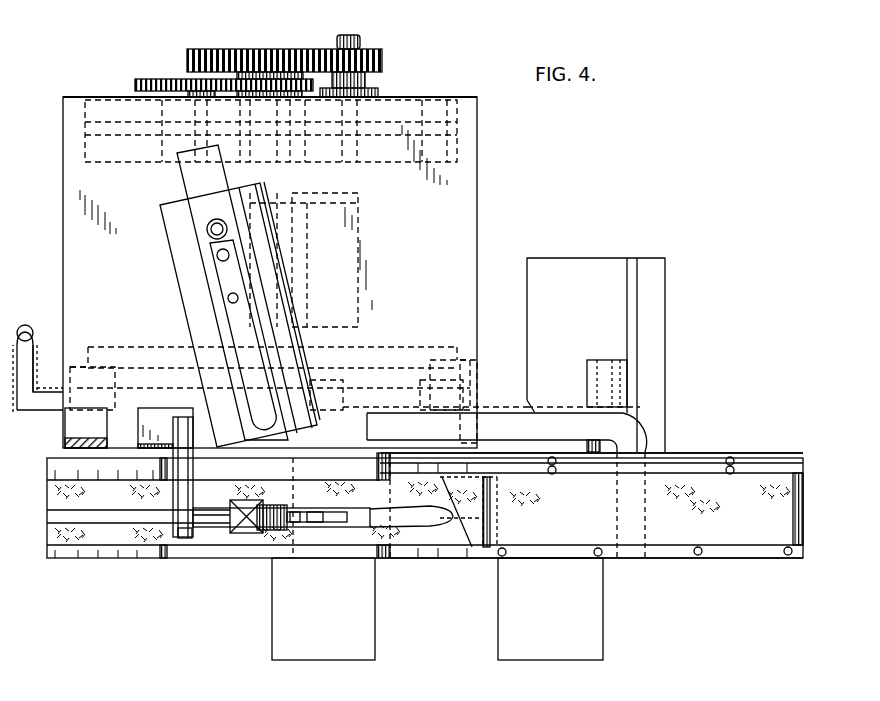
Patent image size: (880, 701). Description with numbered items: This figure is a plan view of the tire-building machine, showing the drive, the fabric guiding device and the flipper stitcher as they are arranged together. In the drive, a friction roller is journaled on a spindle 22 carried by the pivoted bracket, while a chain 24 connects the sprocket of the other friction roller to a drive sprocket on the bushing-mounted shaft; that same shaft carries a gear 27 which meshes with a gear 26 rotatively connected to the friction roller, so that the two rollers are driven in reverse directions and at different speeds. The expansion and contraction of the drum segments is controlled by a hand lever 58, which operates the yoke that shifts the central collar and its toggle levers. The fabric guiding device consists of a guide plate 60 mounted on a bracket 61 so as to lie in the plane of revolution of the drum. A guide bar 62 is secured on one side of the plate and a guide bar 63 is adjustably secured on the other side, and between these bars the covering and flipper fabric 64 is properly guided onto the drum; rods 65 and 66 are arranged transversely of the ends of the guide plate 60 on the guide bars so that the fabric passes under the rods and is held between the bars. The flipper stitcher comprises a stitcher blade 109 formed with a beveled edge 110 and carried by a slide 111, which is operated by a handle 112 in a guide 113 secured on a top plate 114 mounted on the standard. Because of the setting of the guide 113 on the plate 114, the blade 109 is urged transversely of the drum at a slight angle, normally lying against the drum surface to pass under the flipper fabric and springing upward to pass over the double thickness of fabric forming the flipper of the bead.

The spindle 22 is at (352, 38).
The chain 24 is at (183, 82).
The gear 26 is at (383, 64).
The gear 27 is at (243, 57).
The hand lever 58 is at (37, 362).
The guide plate 60 is at (752, 457).
The bracket 61 is at (600, 423).
The guide bar 62 is at (675, 552).
The guide bar 63 is at (680, 472).
The covering and flipper fabric 64 is at (597, 512).
The rod 65 is at (797, 510).
The rod 66 is at (472, 547).
The stitcher blade 109 is at (260, 397).
The beveled edge 110 is at (253, 437).
The slide 111 is at (200, 172).
The handle 112 is at (218, 222).
The guide 113 is at (262, 297).
The top plate 114 is at (433, 247).